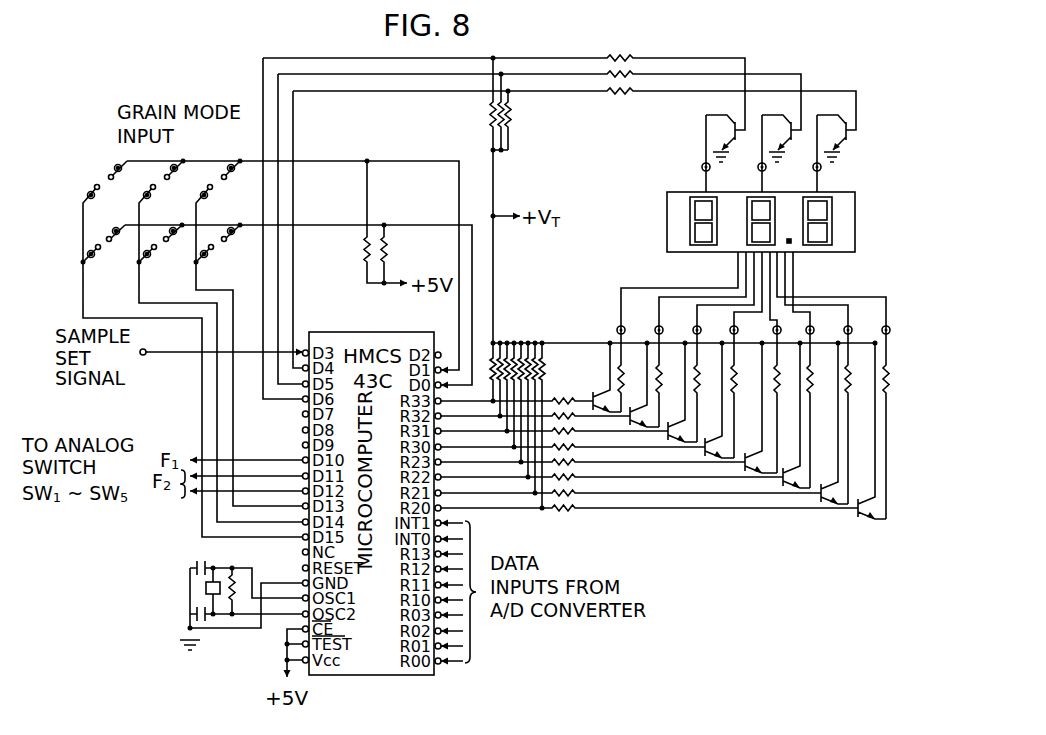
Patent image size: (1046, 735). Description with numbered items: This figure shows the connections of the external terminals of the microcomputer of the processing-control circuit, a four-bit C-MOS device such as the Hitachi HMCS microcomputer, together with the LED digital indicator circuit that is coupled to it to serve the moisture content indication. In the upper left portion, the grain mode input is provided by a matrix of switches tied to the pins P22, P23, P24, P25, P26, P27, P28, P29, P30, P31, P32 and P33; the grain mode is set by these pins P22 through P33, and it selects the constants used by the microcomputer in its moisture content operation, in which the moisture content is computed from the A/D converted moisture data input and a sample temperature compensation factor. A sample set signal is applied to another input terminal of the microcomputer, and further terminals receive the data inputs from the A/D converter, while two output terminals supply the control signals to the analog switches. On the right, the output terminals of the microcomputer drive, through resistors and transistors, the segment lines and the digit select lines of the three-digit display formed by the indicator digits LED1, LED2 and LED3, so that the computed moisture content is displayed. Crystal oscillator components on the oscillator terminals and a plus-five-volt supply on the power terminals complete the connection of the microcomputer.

The pin P22 is at (217, 224).
The pin P23 is at (240, 181).
The pin P24 is at (213, 266).
The pin P25 is at (239, 245).
The pin P26 is at (160, 224).
The pin P27 is at (184, 181).
The pin P28 is at (156, 266).
The pin P29 is at (180, 245).
The pin P30 is at (104, 224).
The pin P31 is at (128, 181).
The pin P32 is at (99, 266).
The pin P33 is at (122, 245).
The seven-segment LED display digit 1 LED1 is at (834, 207).
The seven-segment LED display digit 2 LED2 is at (778, 207).
The seven-segment LED display digit 3 LED3 is at (721, 207).